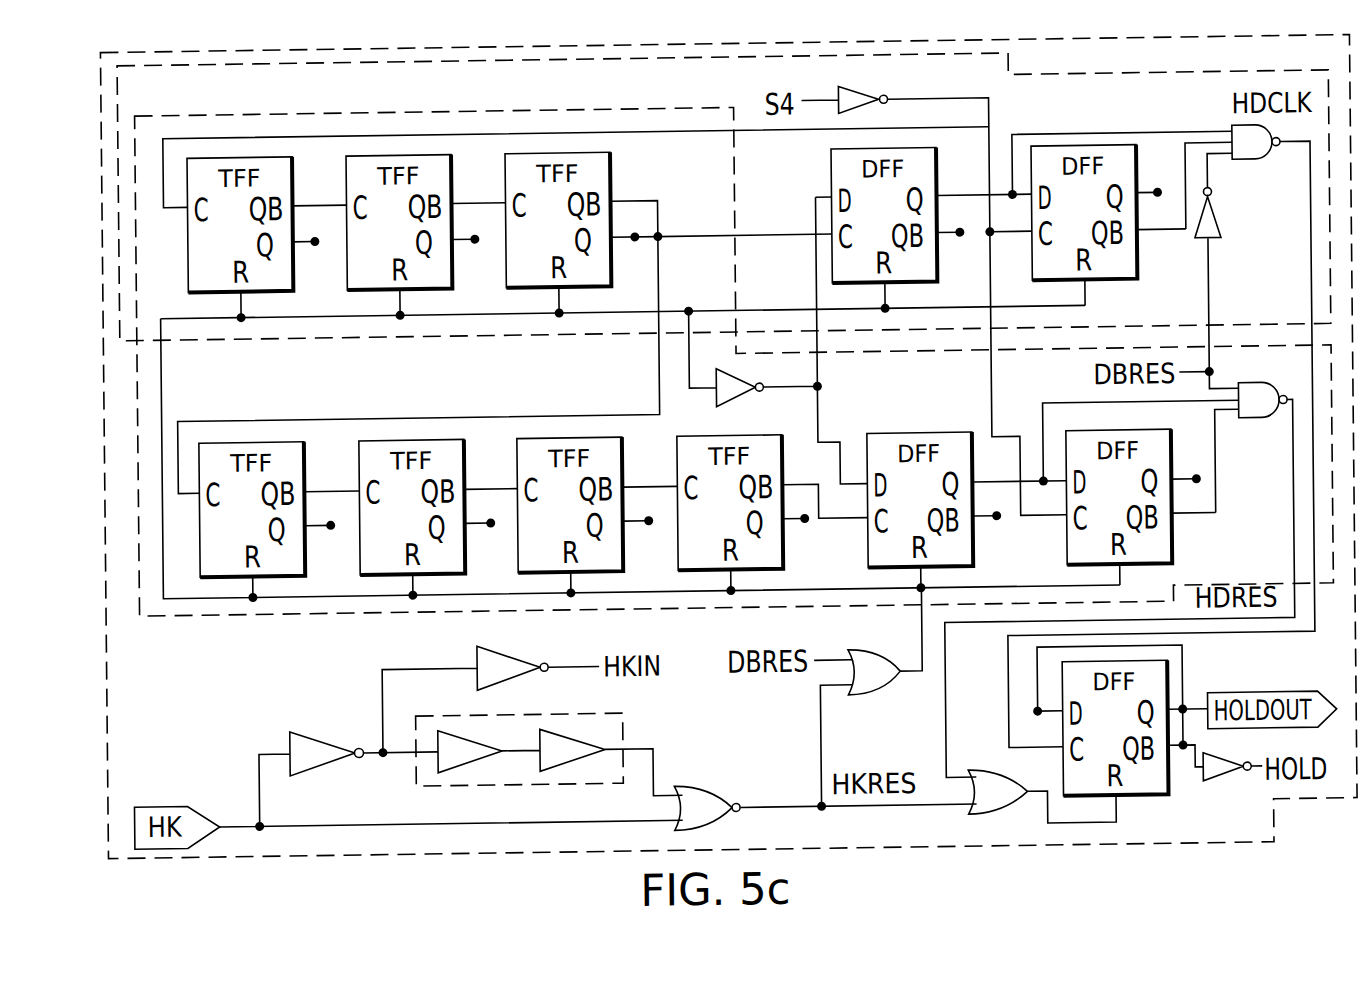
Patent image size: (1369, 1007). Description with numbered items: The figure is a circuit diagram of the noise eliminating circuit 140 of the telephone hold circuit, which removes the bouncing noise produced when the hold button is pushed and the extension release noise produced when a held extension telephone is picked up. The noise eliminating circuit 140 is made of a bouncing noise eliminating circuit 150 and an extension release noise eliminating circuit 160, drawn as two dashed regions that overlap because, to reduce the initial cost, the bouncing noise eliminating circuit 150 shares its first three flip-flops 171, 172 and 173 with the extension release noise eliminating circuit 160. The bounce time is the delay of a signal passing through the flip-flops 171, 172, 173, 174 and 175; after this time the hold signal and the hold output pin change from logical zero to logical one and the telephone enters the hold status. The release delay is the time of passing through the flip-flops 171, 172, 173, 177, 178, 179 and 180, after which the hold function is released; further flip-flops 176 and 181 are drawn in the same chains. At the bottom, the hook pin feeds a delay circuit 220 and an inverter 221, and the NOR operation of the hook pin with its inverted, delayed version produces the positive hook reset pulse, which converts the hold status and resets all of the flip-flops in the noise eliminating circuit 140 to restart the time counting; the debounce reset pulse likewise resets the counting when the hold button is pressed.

The noise eliminating circuit 140 is at (1236, 833).
The bouncing noise eliminating circuit 150 is at (989, 72).
The extension release noise eliminating circuit 160 is at (195, 600).
The flip-flop 171 is at (226, 151).
The flip-flop 172 is at (389, 151).
The flip-flop 173 is at (532, 151).
The flip-flop 174 is at (910, 151).
The flip-flop 175 is at (1071, 151).
The T flip-flop 176 is at (239, 436).
The flip-flop 177 is at (402, 436).
The flip-flop 178 is at (556, 436).
The flip-flop 179 is at (783, 546).
The flip-flop 180 is at (916, 436).
The D flip-flop 181 is at (1171, 542).
The delay circuit 220 is at (575, 711).
The inverter 221 is at (680, 787).